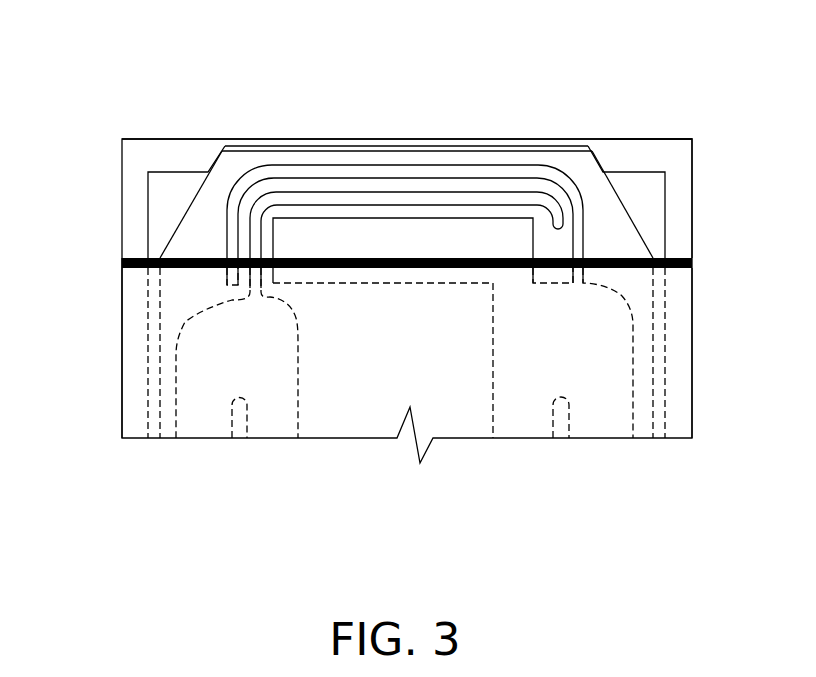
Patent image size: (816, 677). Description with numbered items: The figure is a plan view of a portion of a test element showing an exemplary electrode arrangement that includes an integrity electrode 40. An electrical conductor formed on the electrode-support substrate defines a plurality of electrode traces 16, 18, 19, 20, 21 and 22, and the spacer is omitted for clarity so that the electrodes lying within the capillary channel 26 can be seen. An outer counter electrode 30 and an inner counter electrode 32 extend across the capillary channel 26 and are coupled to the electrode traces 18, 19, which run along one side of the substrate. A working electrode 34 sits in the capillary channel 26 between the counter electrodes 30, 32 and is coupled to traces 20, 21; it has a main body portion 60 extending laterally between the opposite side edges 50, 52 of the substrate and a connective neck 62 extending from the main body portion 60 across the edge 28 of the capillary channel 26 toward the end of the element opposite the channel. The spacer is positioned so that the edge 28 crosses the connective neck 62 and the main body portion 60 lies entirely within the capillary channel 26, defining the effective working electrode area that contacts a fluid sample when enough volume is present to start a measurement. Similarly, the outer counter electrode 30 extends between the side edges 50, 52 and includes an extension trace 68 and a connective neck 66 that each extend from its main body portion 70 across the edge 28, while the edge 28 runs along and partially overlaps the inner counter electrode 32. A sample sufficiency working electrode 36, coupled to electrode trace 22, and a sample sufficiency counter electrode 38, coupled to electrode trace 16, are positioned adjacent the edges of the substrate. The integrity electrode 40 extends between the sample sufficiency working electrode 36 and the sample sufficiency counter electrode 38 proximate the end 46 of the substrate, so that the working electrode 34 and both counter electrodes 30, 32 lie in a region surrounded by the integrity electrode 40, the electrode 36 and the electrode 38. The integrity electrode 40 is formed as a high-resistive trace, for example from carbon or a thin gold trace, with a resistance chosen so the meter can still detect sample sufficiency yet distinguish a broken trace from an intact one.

The electrode trace 16 is at (676, 373).
The electrode trace 18 is at (610, 449).
The electrode trace 19 is at (524, 450).
The electrode trace 20 is at (272, 449).
The electrode trace 21 is at (194, 449).
The electrode trace 22 is at (134, 391).
The capillary channel 26 is at (708, 130).
The edge of capillary channel 28 is at (678, 268).
The outer counter electrode 30 is at (263, 152).
The inner counter electrode 32 is at (354, 299).
The working electrode 34 is at (474, 181).
The sample sufficiency working electrode 36 is at (157, 171).
The sample sufficiency counter electrode 38 is at (652, 171).
The integrity electrode 40 is at (343, 150).
The end of electrode-support substrate 46 is at (632, 139).
The side edge of electrode-support substrate 50 is at (122, 340).
The side edge of electrode-support substrate 52 is at (692, 338).
The main body portion 60 is at (422, 192).
The connective neck 62 is at (250, 228).
The connective neck 66 is at (585, 223).
The extension trace 68 is at (227, 271).
The main body portion 70 is at (292, 165).